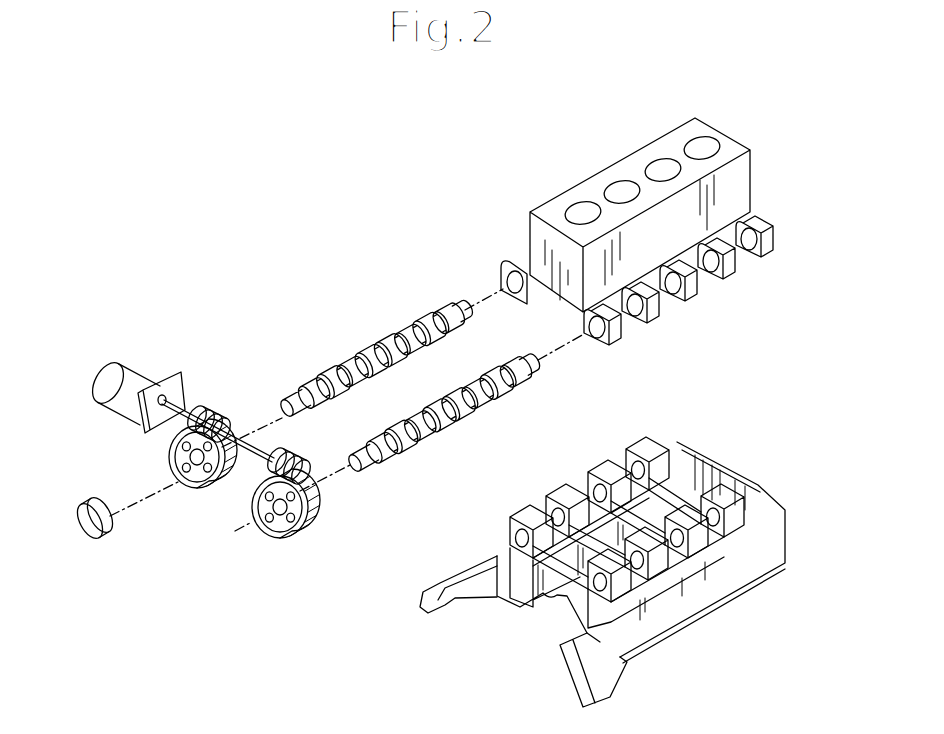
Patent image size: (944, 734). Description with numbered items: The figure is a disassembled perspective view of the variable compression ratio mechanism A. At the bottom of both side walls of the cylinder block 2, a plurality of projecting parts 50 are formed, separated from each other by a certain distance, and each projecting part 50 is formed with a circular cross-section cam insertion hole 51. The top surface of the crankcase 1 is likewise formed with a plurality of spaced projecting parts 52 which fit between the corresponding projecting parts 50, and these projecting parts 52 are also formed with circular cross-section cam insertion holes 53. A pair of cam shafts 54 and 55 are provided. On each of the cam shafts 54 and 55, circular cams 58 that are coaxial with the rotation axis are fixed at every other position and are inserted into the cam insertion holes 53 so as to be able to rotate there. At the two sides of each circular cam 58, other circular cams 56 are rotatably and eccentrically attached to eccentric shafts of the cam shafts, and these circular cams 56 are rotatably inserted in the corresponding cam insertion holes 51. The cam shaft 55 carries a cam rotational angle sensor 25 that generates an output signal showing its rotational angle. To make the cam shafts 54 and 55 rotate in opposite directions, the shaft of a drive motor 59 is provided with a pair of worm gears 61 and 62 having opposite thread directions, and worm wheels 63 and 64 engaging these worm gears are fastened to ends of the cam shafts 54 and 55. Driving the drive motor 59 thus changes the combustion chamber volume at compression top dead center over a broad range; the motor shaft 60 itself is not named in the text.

The crankcase 1 is at (652, 622).
The cylinder block 2 is at (741, 186).
The cam rotational angle sensor 25 is at (87, 503).
The projecting part 50 is at (521, 266).
The cam insertion hole 51 is at (507, 281).
The projecting part 52 is at (646, 455).
The cam insertion hole 53 is at (536, 504).
The cam shaft 54 is at (484, 363).
The cam shaft 55 is at (372, 380).
The circular cam 56 is at (302, 390).
The circular cam 58 is at (331, 374).
The drive motor 59 is at (121, 368).
The drive shaft 60 is at (245, 452).
The worm gear 61 is at (300, 458).
The worm gear 62 is at (204, 406).
The worm wheel 63 is at (285, 539).
The worm wheel 64 is at (180, 482).
The variable compression ratio mechanism A is at (518, 190).